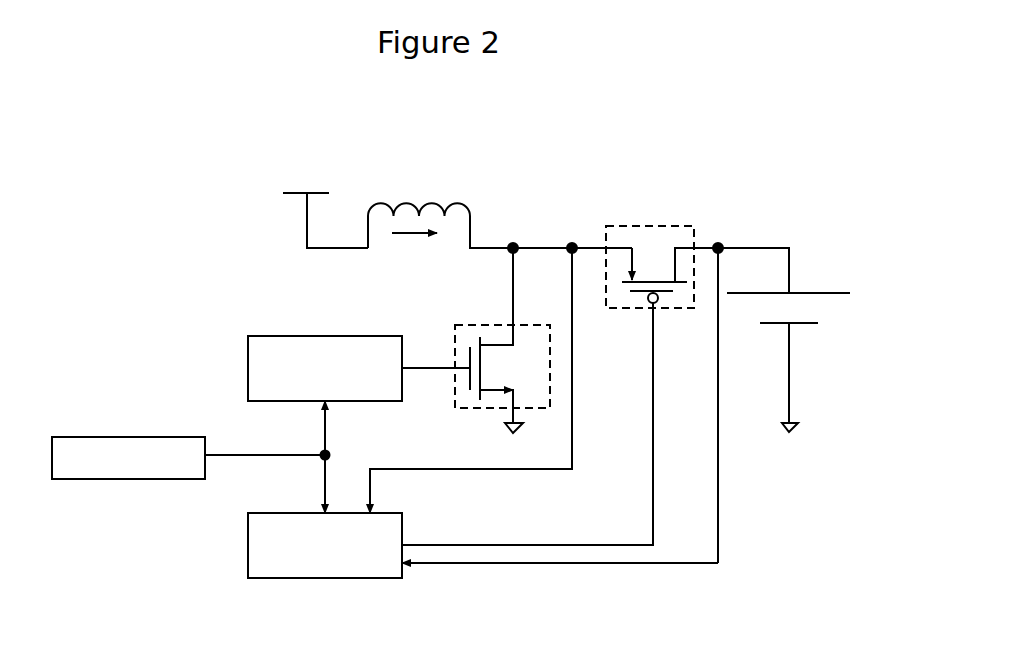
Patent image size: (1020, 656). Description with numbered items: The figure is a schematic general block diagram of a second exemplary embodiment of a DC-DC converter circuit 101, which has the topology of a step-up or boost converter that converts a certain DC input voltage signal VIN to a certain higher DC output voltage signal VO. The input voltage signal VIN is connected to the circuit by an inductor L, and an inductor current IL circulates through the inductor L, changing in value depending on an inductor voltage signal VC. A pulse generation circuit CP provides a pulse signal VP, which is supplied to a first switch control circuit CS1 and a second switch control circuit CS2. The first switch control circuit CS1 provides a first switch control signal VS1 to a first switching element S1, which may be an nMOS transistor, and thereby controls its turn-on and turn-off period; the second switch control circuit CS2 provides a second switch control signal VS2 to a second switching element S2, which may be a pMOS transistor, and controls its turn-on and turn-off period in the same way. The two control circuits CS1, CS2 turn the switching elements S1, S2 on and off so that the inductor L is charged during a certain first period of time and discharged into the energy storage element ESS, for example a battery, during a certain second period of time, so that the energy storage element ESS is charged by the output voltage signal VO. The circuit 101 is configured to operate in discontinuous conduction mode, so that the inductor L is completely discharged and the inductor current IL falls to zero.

The DC-DC converter circuit 101 is at (120, 176).
The input voltage signal VIN is at (325, 203).
The inductor L is at (500, 208).
The inductor current IL is at (414, 247).
The inductor voltage signal VC is at (473, 361).
The first switching element S1 is at (502, 340).
The second switching element S2 is at (560, 385).
The first switch control signal VS1 is at (436, 352).
The second switch control signal VS2 is at (560, 540).
The output voltage signal VO is at (748, 386).
The energy storage element ESS is at (812, 362).
The first switch control circuit CS1 is at (325, 368).
The second switch control circuit CS2 is at (325, 545).
The pulse generation circuit CP is at (128, 458).
The pulse signal VP is at (267, 457).